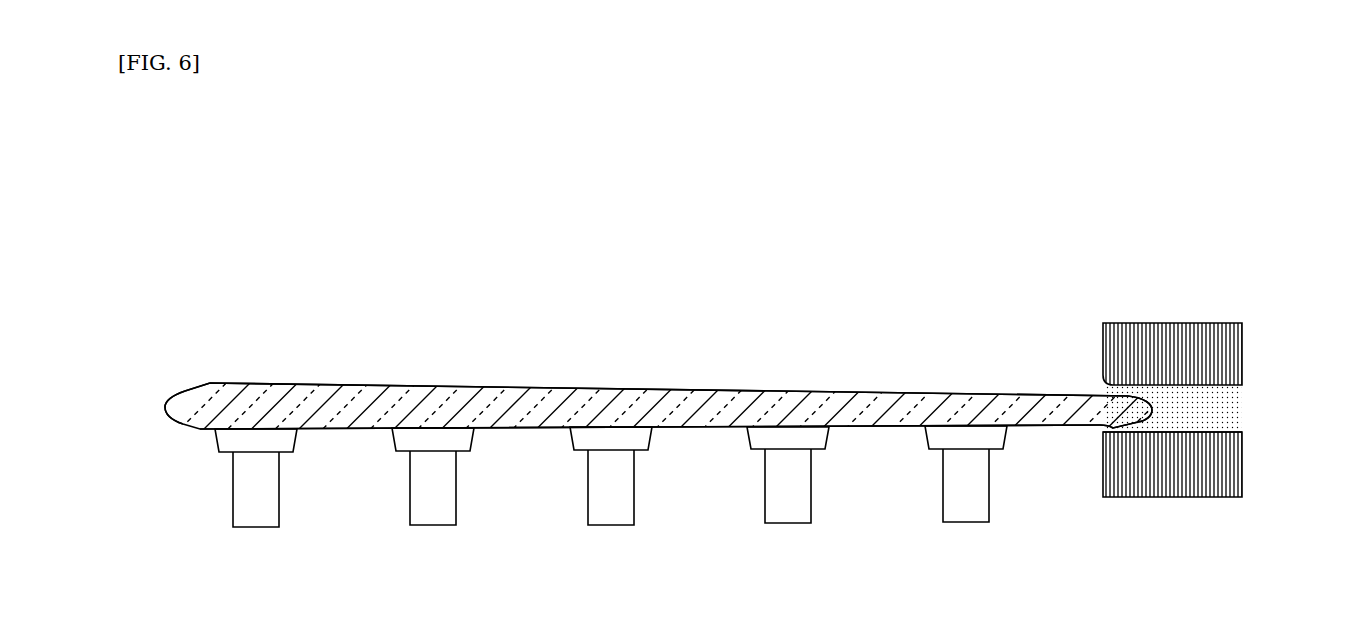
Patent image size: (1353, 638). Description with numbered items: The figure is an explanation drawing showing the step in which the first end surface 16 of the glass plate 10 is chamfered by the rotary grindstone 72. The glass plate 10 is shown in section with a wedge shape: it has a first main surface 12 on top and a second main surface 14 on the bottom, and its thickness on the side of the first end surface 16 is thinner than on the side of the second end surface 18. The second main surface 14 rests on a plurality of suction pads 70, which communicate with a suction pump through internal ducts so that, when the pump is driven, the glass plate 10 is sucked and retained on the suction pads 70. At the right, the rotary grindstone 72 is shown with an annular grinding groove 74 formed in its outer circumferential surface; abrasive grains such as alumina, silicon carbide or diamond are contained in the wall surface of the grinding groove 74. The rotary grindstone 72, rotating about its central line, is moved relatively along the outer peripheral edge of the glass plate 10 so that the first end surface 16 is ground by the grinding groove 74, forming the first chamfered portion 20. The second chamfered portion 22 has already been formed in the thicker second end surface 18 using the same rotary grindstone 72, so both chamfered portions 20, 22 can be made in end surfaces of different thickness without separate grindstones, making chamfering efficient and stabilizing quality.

The glass plate 10 is at (651, 346).
The first main surface 12 is at (517, 386).
The second main surface 14 is at (517, 430).
The first end surface 16 is at (1162, 407).
The second end surface 18 is at (166, 407).
The first chamfered portion 20 is at (1142, 433).
The second chamfered portion 22 is at (180, 382).
The suction pads 70 is at (256, 519).
The rotary grindstone 72 is at (1170, 330).
The grinding groove 74 is at (1113, 429).